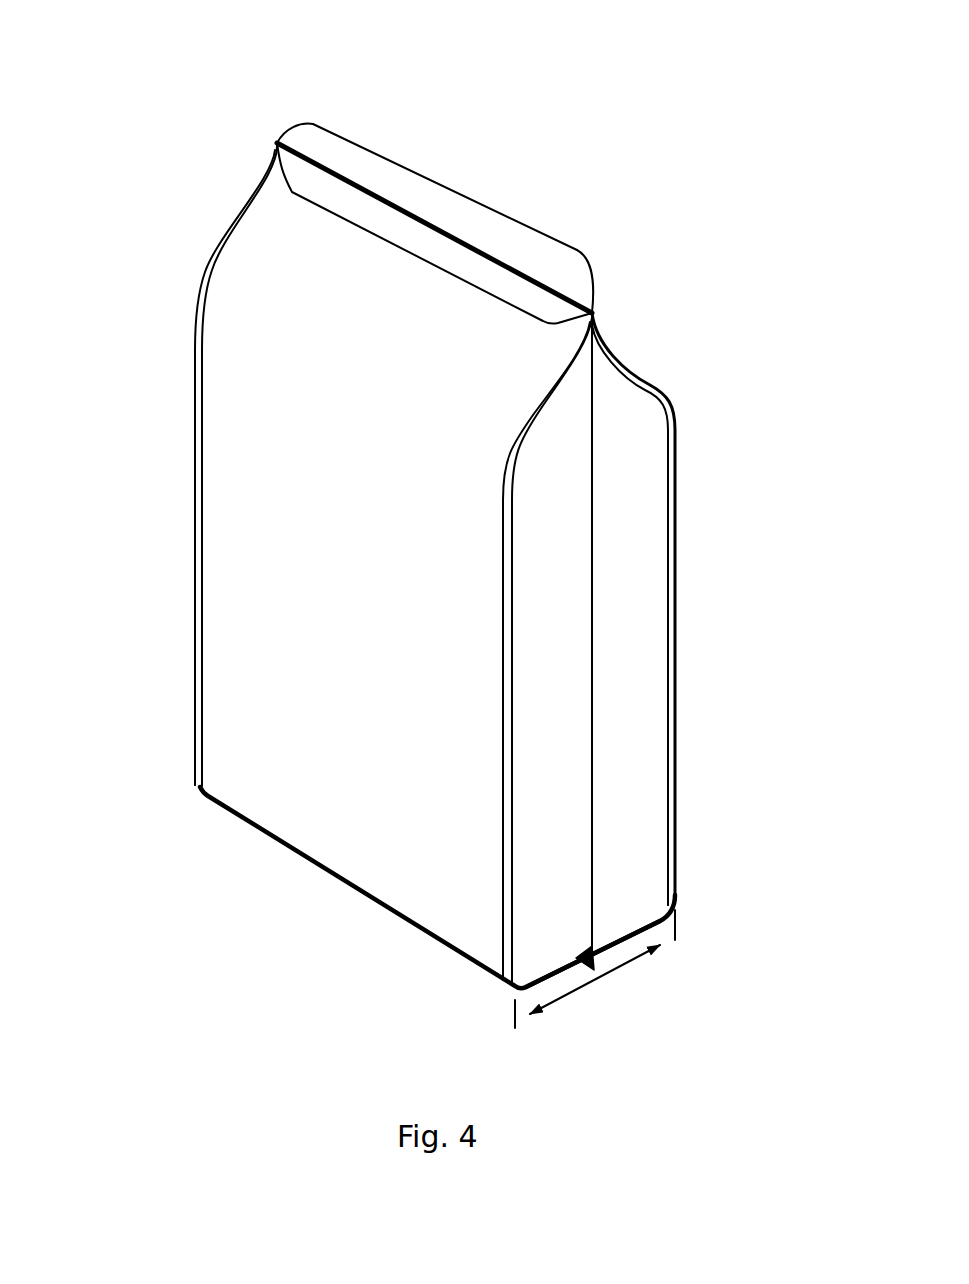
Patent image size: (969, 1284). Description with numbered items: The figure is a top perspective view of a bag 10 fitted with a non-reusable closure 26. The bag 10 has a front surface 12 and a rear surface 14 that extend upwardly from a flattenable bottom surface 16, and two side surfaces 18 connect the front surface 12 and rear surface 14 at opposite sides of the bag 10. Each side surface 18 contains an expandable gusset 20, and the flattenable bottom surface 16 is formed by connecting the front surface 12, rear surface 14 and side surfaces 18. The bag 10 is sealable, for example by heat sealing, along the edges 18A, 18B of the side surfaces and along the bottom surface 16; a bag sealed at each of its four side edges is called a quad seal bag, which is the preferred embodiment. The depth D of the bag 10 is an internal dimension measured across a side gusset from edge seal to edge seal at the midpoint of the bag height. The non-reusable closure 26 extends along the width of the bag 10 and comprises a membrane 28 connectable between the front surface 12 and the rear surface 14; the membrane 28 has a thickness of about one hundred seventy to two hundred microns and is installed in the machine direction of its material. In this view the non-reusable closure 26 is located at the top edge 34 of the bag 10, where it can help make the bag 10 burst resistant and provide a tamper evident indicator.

The bag 10 is at (165, 163).
The front surface 12 is at (232, 493).
The rear surface 14 is at (684, 441).
The flattenable bottom surface 16 is at (645, 917).
The side surface 18 is at (653, 720).
The side surface edge 18A is at (197, 787).
The side surface edge 18B is at (670, 682).
The expandable gusset 20 is at (593, 547).
The non-reusable closure 26 is at (506, 201).
The membrane 28 is at (563, 247).
The top edge 34 is at (273, 137).
The depth D is at (595, 969).